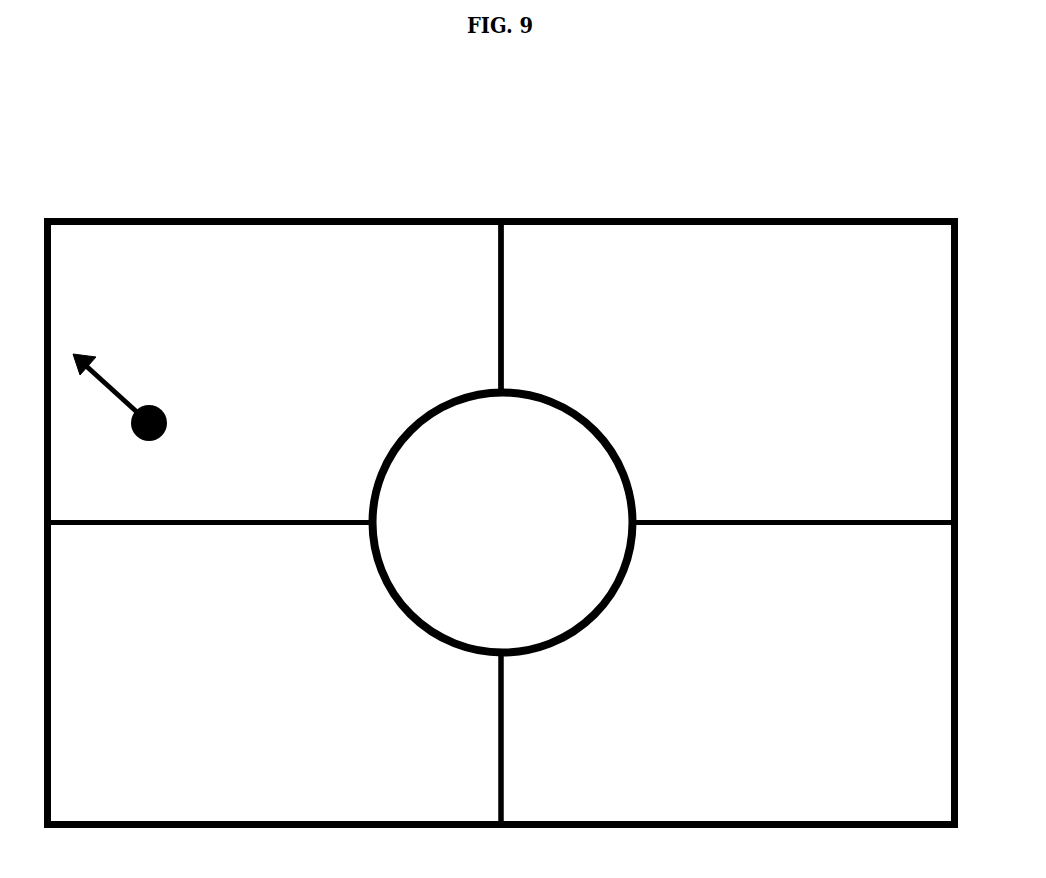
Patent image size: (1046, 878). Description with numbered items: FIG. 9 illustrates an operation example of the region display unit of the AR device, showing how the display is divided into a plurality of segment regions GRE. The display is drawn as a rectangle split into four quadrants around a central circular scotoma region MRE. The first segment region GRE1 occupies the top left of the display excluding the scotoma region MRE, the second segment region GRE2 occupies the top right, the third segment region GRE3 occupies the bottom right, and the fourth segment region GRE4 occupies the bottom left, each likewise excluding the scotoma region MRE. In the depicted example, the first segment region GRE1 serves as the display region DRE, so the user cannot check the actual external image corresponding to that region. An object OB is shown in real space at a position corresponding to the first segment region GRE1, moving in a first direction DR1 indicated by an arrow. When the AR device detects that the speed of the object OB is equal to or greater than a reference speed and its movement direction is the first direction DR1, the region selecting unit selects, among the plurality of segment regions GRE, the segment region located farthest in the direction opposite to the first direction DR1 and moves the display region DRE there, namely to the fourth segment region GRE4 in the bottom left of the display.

The segment regions GRE is at (697, 142).
The first segment region GRE1 is at (272, 370).
The display region DRE is at (272, 370).
The second segment region GRE2 is at (729, 370).
The third segment region GRE3 is at (729, 676).
The fourth segment region GRE4 is at (272, 676).
The scotoma region MRE is at (503, 523).
The object OB is at (149, 437).
The first direction DR1 is at (108, 388).